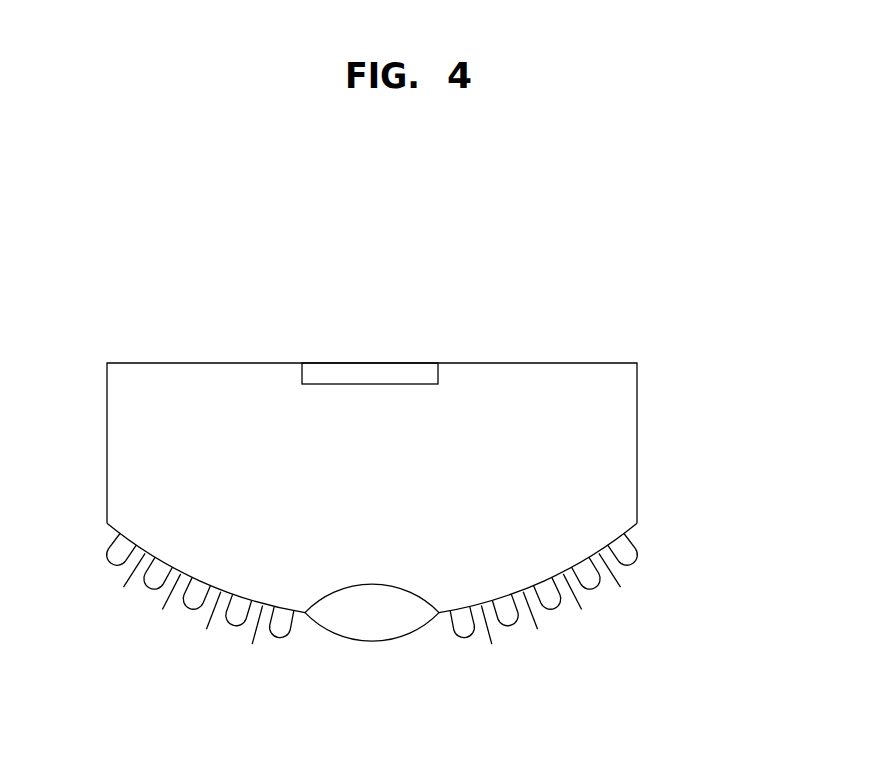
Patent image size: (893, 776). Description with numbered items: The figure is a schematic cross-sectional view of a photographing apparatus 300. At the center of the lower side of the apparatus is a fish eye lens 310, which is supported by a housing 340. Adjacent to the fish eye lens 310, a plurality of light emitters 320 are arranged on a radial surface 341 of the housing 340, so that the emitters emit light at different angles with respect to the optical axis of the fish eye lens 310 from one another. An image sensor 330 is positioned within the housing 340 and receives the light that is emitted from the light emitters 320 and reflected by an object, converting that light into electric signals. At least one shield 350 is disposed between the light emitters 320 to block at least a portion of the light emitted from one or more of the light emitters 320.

The photographing apparatus 300 is at (652, 185).
The fish eye lens 310 is at (370, 642).
The light emitters 320 is at (168, 632).
The image sensor 330 is at (368, 373).
The housing 340 is at (637, 403).
The radial surface 341 is at (519, 596).
The shield 350 is at (125, 587).